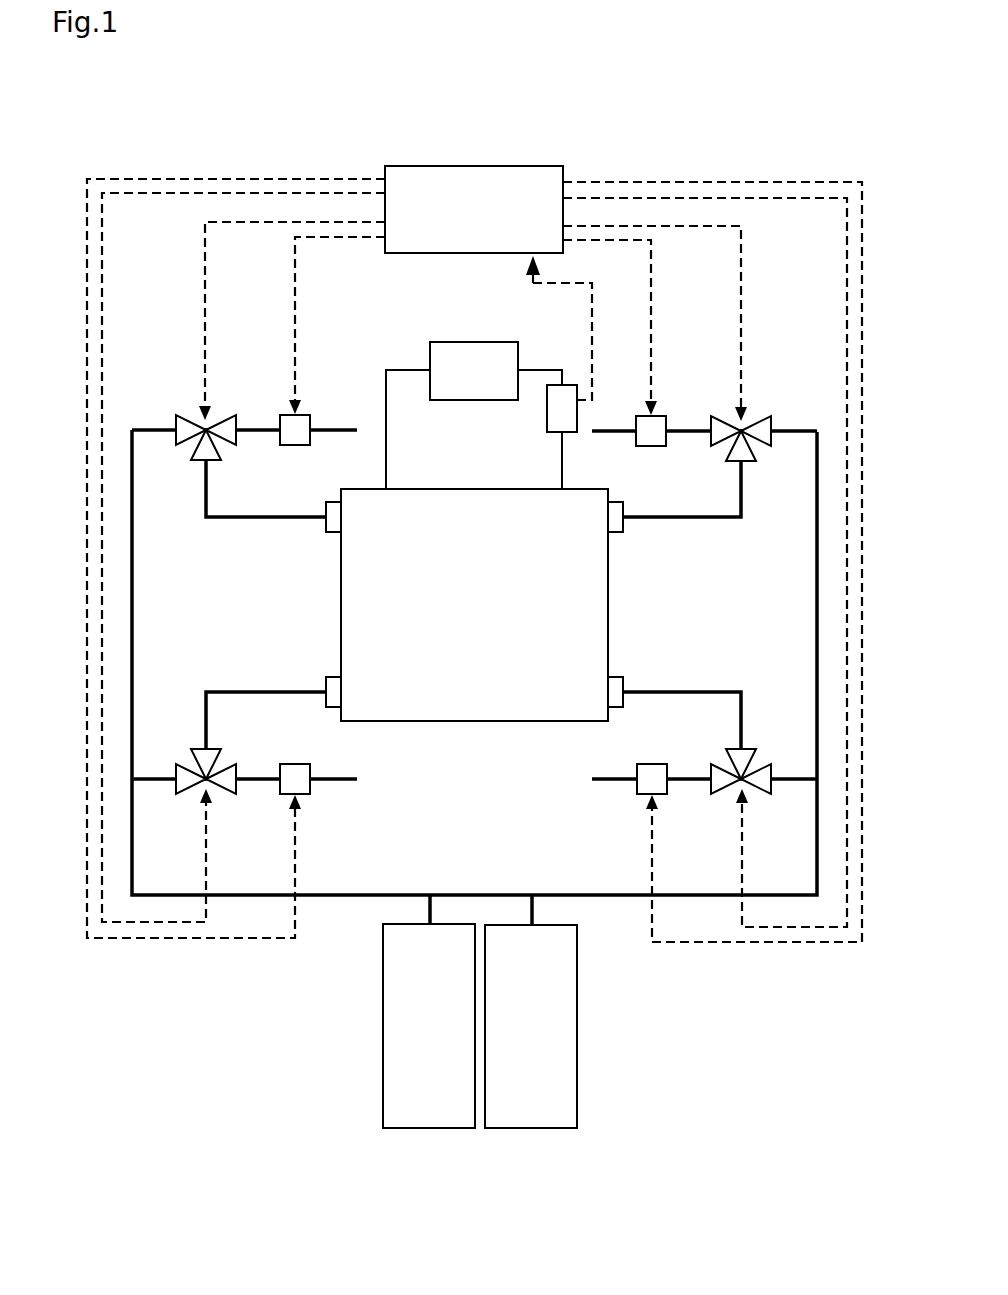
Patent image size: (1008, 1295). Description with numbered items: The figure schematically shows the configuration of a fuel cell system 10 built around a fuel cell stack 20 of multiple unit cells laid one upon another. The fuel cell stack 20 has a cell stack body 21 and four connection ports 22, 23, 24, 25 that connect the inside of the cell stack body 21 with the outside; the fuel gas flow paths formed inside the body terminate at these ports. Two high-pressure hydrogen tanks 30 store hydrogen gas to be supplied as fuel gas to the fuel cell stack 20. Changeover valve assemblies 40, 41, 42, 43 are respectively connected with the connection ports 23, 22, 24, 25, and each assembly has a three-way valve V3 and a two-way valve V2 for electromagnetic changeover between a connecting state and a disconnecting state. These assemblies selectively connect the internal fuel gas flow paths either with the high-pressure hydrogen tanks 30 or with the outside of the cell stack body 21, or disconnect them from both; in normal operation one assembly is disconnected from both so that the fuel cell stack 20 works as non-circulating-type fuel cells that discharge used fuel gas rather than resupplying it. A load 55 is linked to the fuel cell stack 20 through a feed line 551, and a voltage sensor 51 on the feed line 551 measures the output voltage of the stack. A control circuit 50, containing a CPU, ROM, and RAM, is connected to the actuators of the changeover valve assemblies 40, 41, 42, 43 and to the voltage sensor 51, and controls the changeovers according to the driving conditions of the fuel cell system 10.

The fuel cell system 10 is at (688, 1033).
The fuel cell stack 20 is at (474, 605).
The cell stack body 21 is at (474, 605).
The connection port 22 is at (612, 703).
The connection port 23 is at (615, 505).
The connection port 24 is at (332, 505).
The connection port 25 is at (337, 702).
The high-pressure hydrogen tank 30 is at (437, 1118).
The changeover valve assembly 40 is at (696, 537).
The changeover valve assembly 41 is at (696, 680).
The changeover valve assembly 42 is at (251, 532).
The changeover valve assembly 43 is at (251, 678).
The control circuit 50 is at (482, 180).
The voltage sensor 51 is at (555, 410).
The load 55 is at (460, 350).
The feed line 551 is at (562, 458).
The two-way valve V2 is at (288, 424).
The three-way valve V3 is at (189, 426).